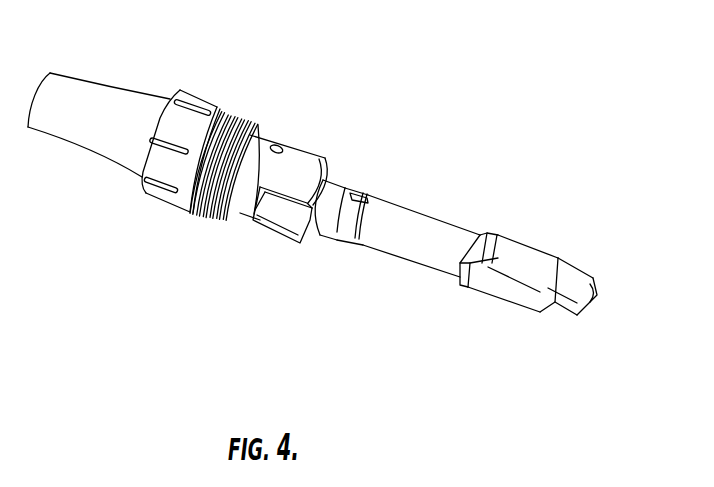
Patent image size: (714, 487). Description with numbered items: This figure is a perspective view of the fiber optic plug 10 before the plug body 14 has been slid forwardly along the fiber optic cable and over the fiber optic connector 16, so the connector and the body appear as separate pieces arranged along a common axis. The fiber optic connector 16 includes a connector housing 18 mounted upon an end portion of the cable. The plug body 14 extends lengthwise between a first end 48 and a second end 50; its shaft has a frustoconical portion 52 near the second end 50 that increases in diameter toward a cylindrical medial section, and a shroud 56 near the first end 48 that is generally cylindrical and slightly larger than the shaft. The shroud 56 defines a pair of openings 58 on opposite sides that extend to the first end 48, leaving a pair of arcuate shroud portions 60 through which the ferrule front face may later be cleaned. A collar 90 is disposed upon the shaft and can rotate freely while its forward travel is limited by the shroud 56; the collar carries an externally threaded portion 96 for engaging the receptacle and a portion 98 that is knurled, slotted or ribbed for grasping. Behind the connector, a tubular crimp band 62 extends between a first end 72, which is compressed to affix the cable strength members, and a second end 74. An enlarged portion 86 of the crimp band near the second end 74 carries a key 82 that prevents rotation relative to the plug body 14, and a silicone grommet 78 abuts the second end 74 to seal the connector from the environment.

The fiber optic plug 10 is at (499, 97).
The plug body 14 is at (165, 231).
The fiber optic connector 16 is at (560, 237).
The connector housing 18 is at (483, 293).
The first end 48 is at (338, 167).
The second end 50 is at (41, 78).
The frustoconical portion 52 is at (83, 135).
The shroud 56 is at (293, 150).
The openings 58 is at (281, 219).
The arcuate shroud portions 60 is at (305, 237).
The crimp band 62 is at (410, 247).
The first end 72 is at (482, 234).
The second end 74 is at (342, 170).
The grommet 78 is at (370, 182).
The key 82 is at (369, 194).
The enlarged portion 86 is at (343, 232).
The collar 90 is at (191, 214).
The externally threaded portion 96 is at (232, 113).
The portion 98 is at (198, 102).